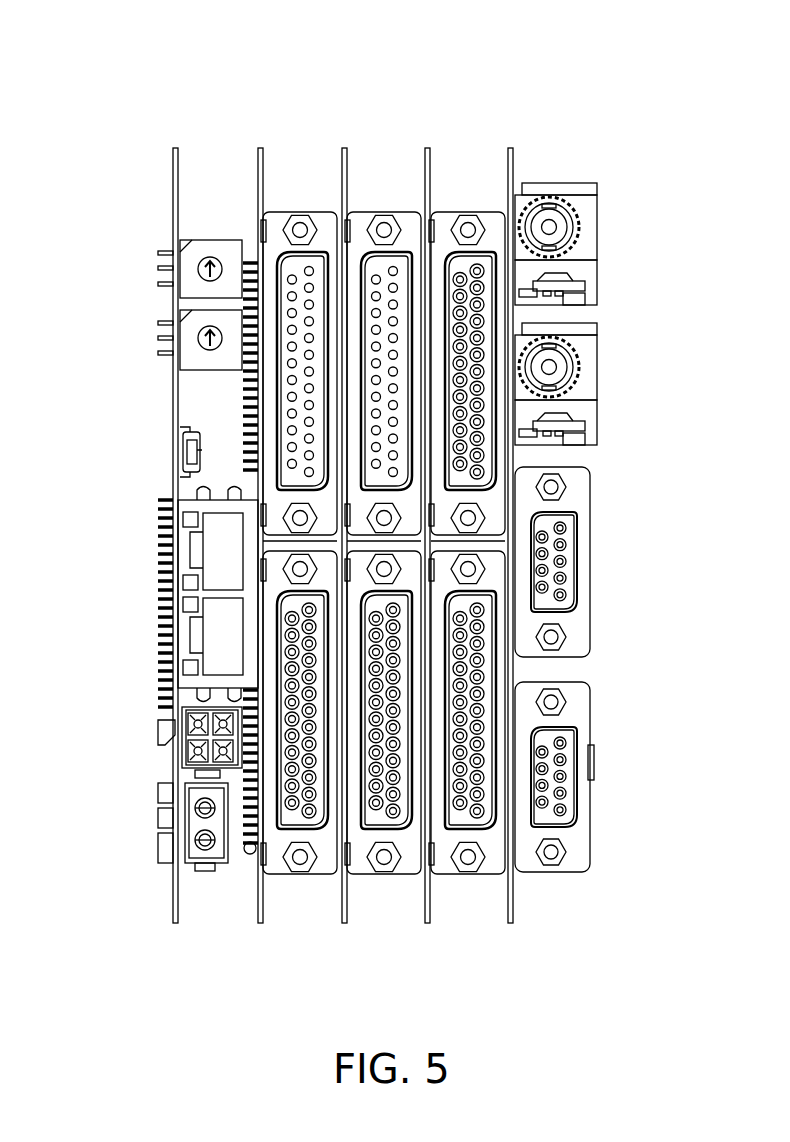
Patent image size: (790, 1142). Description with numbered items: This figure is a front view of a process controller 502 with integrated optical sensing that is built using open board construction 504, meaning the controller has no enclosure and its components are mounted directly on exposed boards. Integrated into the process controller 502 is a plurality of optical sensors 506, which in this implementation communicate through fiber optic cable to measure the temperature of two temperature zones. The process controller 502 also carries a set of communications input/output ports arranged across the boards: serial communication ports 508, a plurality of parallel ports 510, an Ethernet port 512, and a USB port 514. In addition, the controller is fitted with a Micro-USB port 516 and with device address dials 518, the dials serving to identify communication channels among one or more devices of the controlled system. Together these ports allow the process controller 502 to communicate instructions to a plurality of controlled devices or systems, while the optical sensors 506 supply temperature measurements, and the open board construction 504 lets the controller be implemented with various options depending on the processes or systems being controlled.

The process controller 502 is at (164, 50).
The open board construction 504 is at (345, 148).
The optical sensors 506 is at (562, 226).
The serial communication ports 508 is at (568, 561).
The parallel ports 510 is at (327, 218).
The Ethernet port 512 is at (128, 591).
The USB port 514 is at (192, 826).
The Micro-USB port 516 is at (186, 452).
The device address dials 518 is at (162, 245).